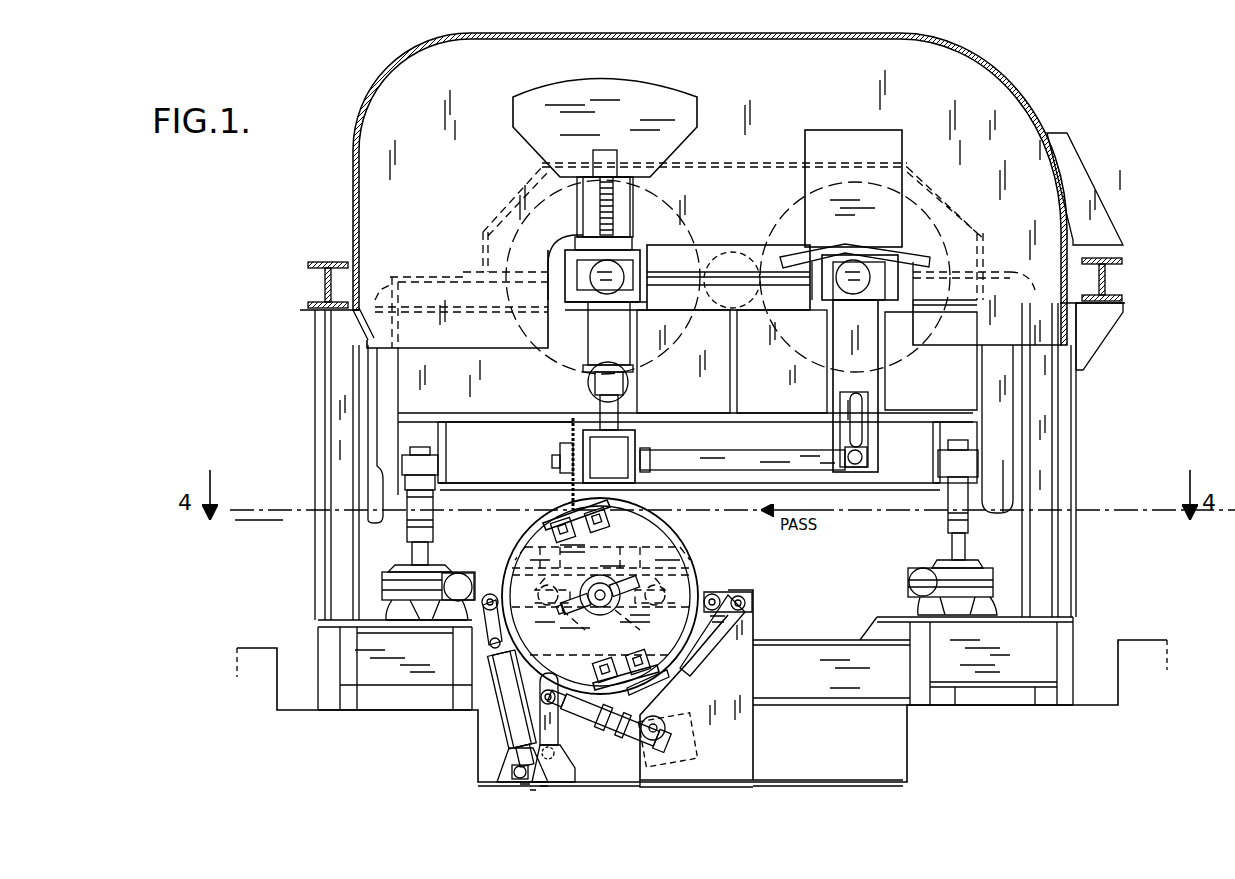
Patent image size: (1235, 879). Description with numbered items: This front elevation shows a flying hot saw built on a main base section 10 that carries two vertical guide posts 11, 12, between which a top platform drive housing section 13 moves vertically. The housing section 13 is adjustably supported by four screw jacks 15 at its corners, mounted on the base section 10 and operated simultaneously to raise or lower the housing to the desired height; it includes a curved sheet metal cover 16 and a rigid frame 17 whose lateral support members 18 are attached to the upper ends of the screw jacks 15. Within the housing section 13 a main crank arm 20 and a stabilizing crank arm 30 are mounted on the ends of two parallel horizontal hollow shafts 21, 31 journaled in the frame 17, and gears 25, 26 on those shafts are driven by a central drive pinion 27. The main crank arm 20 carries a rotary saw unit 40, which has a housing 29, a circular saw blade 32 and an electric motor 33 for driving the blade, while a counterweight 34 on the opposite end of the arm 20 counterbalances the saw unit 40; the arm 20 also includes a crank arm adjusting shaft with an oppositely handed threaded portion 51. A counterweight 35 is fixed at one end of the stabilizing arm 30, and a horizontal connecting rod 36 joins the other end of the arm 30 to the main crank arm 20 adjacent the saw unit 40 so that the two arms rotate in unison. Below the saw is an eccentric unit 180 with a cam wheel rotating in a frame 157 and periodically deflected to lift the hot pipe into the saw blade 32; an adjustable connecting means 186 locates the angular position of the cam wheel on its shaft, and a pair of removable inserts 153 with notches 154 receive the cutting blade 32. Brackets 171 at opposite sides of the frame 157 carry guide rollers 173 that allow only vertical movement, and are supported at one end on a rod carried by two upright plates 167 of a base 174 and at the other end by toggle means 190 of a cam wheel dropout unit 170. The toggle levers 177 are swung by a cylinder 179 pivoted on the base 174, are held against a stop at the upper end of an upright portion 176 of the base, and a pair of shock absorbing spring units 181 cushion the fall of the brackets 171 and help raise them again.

The main base section 10 is at (1070, 634).
The vertical guide post 11 is at (318, 383).
The vertical guide post 12 is at (1062, 420).
The top platform drive housing section 13 is at (446, 384).
The screw jack 15 is at (430, 538).
The curved sheet metal cover 16 is at (925, 45).
The rigid frame 17 is at (752, 310).
The lateral support member 18 is at (441, 442).
The main crank arm 20 is at (583, 383).
The hollow shaft 21 is at (607, 290).
The gear 25 is at (676, 347).
The gear 26 is at (800, 355).
The central drive pinion 27 is at (726, 254).
The housing 29 is at (638, 480).
The stabilizing crank arm 30 is at (833, 395).
The hollow shaft 31 is at (855, 290).
The circular saw blade 32 is at (570, 428).
The electric motor 33 is at (614, 466).
The counterweight 34 is at (672, 95).
The counterweight 35 is at (855, 140).
The horizontal connecting rod 36 is at (740, 458).
The rotary saw unit 40 is at (552, 462).
The threaded portion 51 is at (613, 210).
The removable insert 153 is at (560, 512).
The notch 154 is at (628, 680).
The frame 157 is at (622, 542).
The upright plate 167 is at (743, 758).
The cam wheel dropout unit 170 is at (757, 723).
The bracket 171 is at (692, 643).
The guide roller 173 is at (490, 594).
The base 174 is at (743, 670).
The upright portion 176 is at (497, 767).
The toggle lever 177 is at (558, 731).
The cylinder 179 is at (687, 742).
The eccentric unit 180 is at (802, 626).
The shock absorbing spring unit 181 is at (497, 727).
The adjustable connecting means 186 is at (610, 605).
The toggle means 190 is at (628, 646).